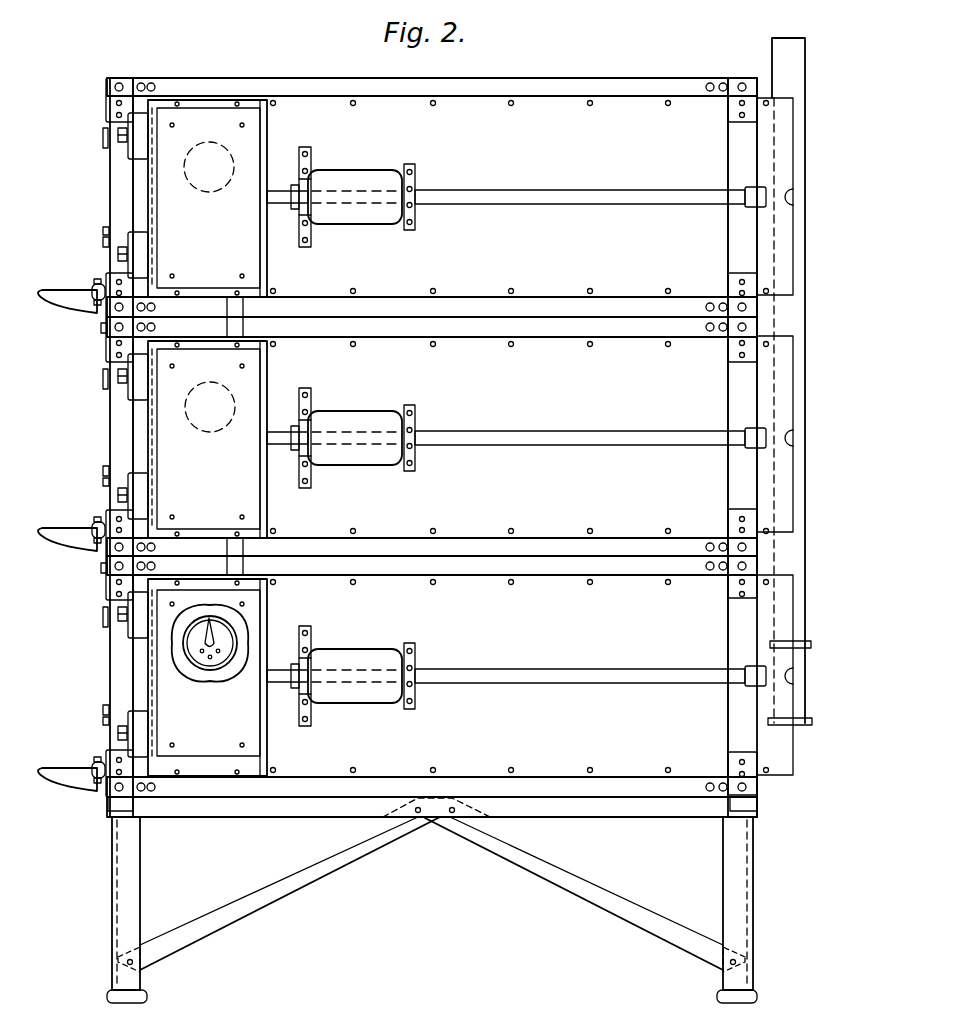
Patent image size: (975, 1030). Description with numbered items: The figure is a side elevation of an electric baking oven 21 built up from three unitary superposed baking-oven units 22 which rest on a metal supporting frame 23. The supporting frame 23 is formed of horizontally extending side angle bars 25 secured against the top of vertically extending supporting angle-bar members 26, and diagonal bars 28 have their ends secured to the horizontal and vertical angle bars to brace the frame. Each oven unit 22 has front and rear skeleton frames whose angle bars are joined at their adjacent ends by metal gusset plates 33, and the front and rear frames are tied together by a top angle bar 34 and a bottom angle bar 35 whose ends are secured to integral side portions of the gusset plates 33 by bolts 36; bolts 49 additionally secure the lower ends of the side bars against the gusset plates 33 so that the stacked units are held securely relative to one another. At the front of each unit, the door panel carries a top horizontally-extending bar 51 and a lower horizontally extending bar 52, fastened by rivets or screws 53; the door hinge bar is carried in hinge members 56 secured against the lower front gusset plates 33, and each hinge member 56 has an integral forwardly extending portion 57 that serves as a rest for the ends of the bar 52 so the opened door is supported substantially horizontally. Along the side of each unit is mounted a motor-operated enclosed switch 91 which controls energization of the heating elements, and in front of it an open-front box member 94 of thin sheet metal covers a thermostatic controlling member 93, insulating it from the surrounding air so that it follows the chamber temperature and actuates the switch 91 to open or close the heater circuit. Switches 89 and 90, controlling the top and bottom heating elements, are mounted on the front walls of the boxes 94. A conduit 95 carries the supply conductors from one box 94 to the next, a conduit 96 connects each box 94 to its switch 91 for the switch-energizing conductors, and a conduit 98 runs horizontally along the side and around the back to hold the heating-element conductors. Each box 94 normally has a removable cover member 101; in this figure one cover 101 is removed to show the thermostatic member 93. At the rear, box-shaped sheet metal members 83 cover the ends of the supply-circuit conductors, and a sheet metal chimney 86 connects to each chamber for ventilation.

The electric baking oven 21 is at (20, 453).
The baking-oven unit 22 is at (612, 112).
The supporting frame 23 is at (453, 910).
The side angle bar 25 is at (229, 810).
The supporting angle-bar member 26 is at (130, 895).
The brace bar 28 is at (265, 893).
The gusset plate 33 is at (111, 80).
The top angle bar 34 is at (468, 90).
The bottom angle bar 35 is at (452, 305).
The bolt 36 is at (142, 82).
The bolt 49 is at (102, 328).
The top horizontally-extending bar 51 is at (103, 130).
The horizontally extending bar 52 is at (103, 229).
The rivets or screws 53 is at (103, 240).
The hinge member 56 is at (94, 289).
The forwardly extending portion 57 is at (40, 294).
The sheet metal member 83 is at (793, 236).
The sheet metal chimney 86 is at (790, 50).
The switch 89 is at (135, 146).
The switch 90 is at (137, 252).
The motor-operated enclosed switch 91 is at (345, 177).
The thermostatic controlling member 93 is at (219, 180).
The open-front box member 94 is at (250, 113).
The conduit 95 is at (236, 325).
The conduit 96 is at (282, 202).
The conduit 98 is at (485, 197).
The removable cover member 101 is at (250, 258).